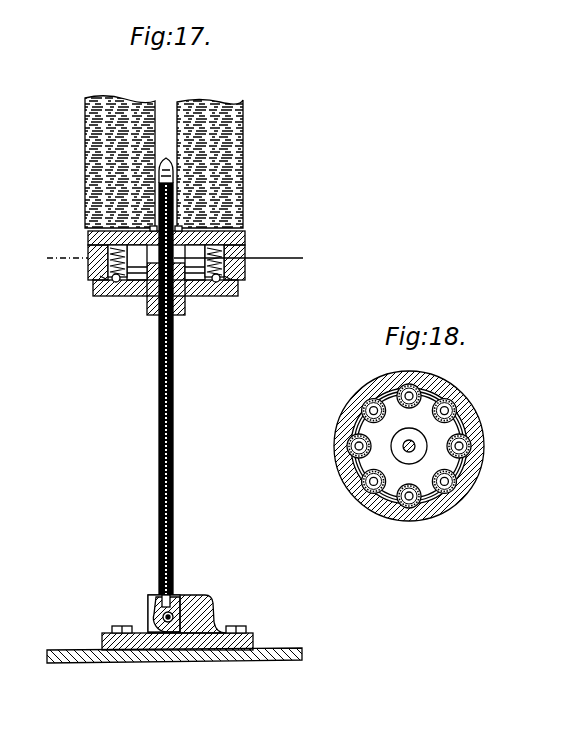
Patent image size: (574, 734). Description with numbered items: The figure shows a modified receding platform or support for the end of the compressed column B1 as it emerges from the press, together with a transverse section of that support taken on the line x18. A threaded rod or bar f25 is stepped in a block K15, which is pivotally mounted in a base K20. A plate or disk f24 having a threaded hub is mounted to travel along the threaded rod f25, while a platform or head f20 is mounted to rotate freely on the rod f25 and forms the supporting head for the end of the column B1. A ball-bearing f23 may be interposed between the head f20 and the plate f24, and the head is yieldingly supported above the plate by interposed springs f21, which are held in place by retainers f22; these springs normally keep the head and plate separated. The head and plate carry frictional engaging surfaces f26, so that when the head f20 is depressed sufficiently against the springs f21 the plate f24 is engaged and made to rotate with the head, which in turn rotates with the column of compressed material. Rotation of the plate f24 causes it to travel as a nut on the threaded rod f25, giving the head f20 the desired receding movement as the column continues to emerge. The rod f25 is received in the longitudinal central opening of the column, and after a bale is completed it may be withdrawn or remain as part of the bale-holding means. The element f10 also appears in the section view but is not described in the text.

In FIG. 17, the compressed column B1 is at (243, 144).
In FIG. 17, the top plate f10 is at (243, 222).
In FIG. 17, the platform or head f20 is at (244, 248).
In FIG. 18, the platform or head f20 is at (477, 474).
In FIG. 17, the springs f21 is at (275, 290).
In FIG. 18, the springs f21 is at (465, 445).
In FIG. 17, the retainers f22 is at (108, 283).
In FIG. 18, the retainers f22 is at (448, 403).
In FIG. 17, the ball-bearing f23 is at (115, 283).
In FIG. 17, the plate or disk f24 is at (205, 290).
In FIG. 17, the threaded rod or bar f25 is at (174, 405).
In FIG. 18, the threaded rod or bar f25 is at (404, 448).
In FIG. 17, the frictional engaging surfaces f26 is at (260, 322).
In FIG. 17, the section line x18 is at (183, 255).
In FIG. 17, the block K15 is at (150, 603).
In FIG. 17, the base K20 is at (210, 596).